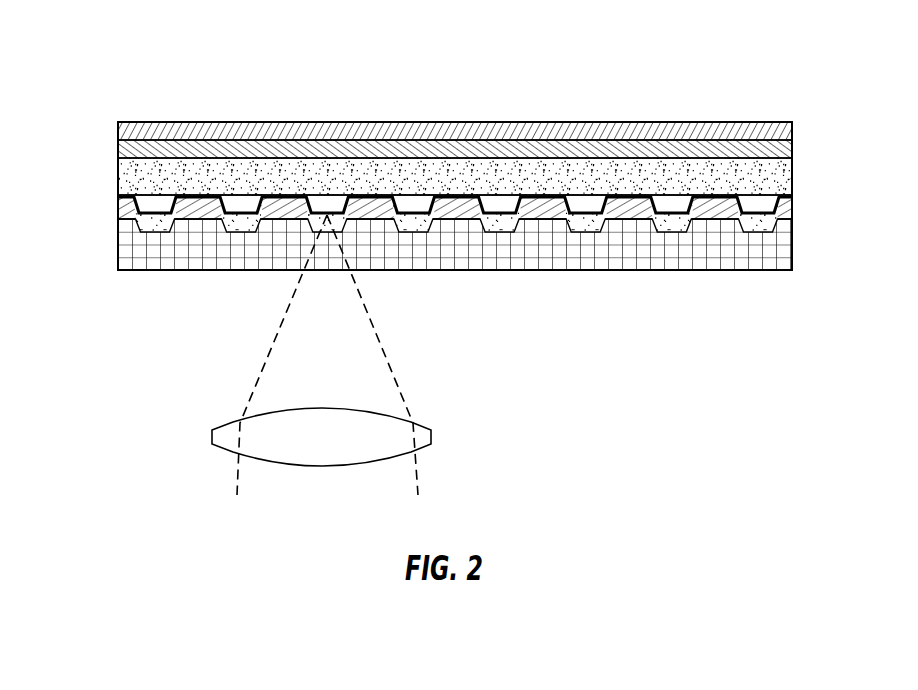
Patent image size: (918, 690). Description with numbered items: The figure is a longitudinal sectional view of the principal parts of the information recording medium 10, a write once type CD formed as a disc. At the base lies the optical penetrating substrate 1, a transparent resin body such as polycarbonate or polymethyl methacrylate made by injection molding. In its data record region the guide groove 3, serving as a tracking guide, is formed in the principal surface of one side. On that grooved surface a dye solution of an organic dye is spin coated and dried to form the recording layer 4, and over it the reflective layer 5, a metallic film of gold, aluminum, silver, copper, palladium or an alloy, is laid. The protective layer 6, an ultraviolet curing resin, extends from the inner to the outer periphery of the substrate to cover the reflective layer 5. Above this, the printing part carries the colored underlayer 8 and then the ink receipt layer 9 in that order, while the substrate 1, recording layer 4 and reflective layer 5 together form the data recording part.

The information recording medium 10 is at (157, 58).
The ink receipt layer 9 is at (790, 133).
The colored underlayer 8 is at (788, 145).
The protective layer 6 is at (132, 182).
The recording layer 4 is at (130, 212).
The reflective layer 5 is at (787, 200).
The optical penetrating substrate 1 is at (132, 247).
The guide groove 3 is at (670, 232).